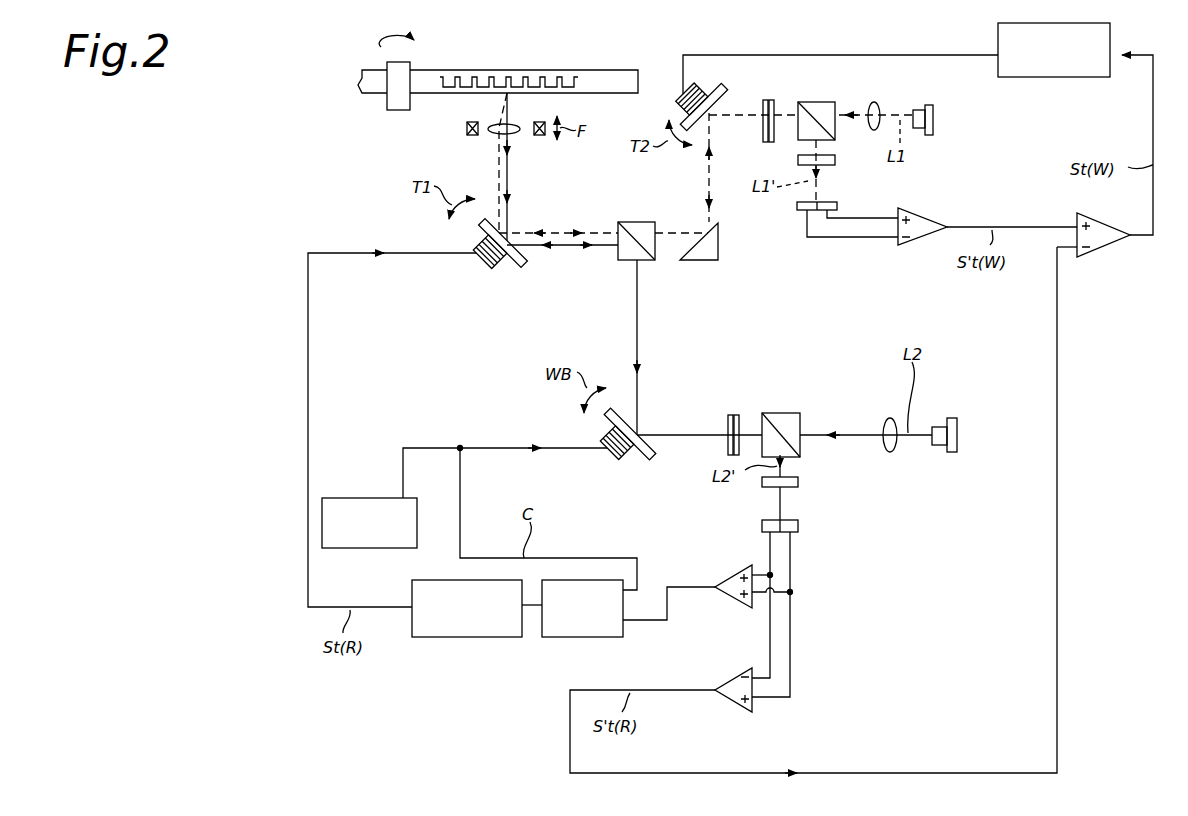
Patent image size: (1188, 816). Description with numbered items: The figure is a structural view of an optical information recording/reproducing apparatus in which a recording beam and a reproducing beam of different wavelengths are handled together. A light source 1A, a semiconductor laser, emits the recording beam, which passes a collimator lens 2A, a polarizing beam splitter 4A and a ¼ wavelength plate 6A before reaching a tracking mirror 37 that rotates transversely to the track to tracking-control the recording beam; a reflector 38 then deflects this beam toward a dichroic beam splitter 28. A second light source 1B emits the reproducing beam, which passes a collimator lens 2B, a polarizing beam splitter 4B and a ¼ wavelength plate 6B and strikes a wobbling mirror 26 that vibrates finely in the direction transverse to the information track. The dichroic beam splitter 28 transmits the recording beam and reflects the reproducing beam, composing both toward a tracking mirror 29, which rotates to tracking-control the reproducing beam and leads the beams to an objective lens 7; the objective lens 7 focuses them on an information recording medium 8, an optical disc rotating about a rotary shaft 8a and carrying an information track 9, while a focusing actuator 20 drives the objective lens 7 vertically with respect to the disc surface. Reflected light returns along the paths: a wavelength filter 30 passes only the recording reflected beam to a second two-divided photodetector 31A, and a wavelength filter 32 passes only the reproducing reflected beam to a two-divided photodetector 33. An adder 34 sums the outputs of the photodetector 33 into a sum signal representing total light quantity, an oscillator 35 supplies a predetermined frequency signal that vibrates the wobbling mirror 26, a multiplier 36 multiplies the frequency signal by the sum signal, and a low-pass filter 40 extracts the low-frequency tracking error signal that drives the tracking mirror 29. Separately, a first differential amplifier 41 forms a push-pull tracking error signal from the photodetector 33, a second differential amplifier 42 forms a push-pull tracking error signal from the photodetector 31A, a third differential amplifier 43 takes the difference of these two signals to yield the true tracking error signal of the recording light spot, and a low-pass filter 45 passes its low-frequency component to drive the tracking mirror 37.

The information recording medium 8 is at (592, 70).
The rotary shaft 8a is at (410, 64).
The information track 9 is at (507, 70).
The objective lens 7 is at (497, 133).
The focusing actuator 20 is at (540, 137).
The tracking mirror 37 is at (677, 97).
The dichroic beam splitter 28 is at (622, 221).
The reflector 38 is at (722, 236).
The tracking mirror 29 is at (512, 265).
The wobbling mirror 26 is at (636, 458).
The ¼ wavelength plate 6A is at (770, 100).
The polarizing beam splitter 4A is at (822, 102).
The collimator lens 2A is at (874, 102).
The light source 1A is at (920, 107).
The wavelength filter 30 is at (797, 158).
The second two-divided photodetector 31A is at (837, 206).
The second differential amplifier 42 is at (920, 217).
The third differential amplifier 43 is at (1113, 245).
The low-pass filter 45 is at (1077, 77).
The ¼ wavelength plate 6B is at (729, 414).
The polarizing beam splitter 4B is at (782, 413).
The collimator lens 2B is at (890, 417).
The light source 1B is at (940, 427).
The wavelength filter 32 is at (800, 481).
The two-divided photodetector 33 is at (800, 526).
The adder 34 is at (725, 575).
The first differential amplifier 41 is at (726, 677).
The oscillator 35 is at (336, 498).
The low-pass filter 40 is at (460, 637).
The multiplier 36 is at (582, 637).